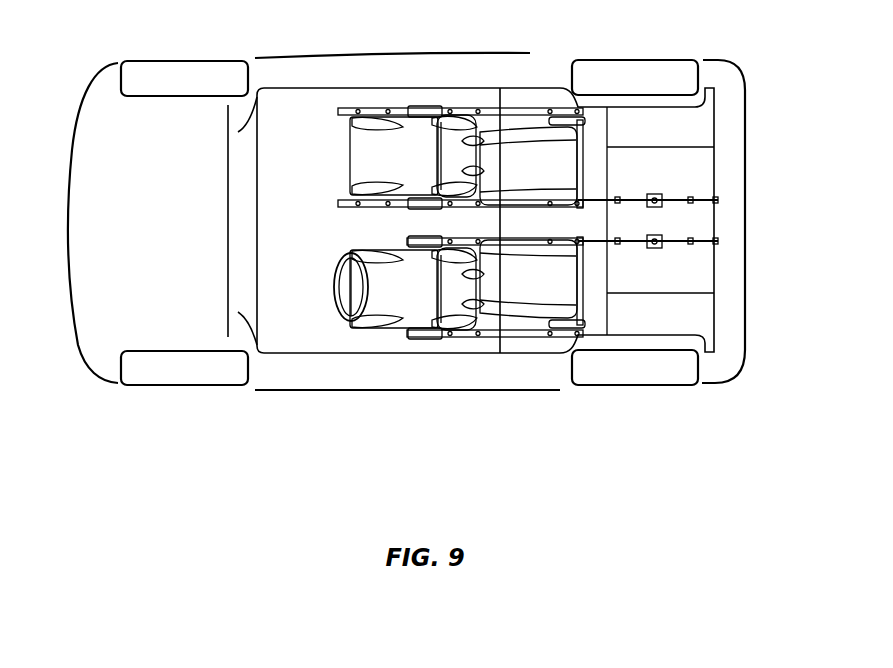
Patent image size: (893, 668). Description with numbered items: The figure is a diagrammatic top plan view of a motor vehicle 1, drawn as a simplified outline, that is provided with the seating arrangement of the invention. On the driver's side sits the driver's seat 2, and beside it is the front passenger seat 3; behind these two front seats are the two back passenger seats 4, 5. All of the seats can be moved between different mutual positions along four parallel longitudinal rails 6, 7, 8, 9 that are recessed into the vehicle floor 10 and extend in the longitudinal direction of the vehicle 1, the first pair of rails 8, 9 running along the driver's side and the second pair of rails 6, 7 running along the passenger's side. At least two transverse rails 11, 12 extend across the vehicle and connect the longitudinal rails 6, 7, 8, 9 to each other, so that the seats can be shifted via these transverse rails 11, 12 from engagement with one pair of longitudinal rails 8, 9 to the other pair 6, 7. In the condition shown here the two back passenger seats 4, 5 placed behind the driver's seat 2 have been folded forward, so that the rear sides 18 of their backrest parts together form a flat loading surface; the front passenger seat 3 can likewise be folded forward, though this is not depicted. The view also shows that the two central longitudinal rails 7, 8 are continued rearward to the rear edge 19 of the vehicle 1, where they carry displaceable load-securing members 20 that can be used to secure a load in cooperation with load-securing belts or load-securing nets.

The motor vehicle 1 is at (97, 62).
The driver's seat 2 is at (380, 290).
The front passenger seat 3 is at (380, 150).
The back passenger seat 4 is at (503, 163).
The back passenger seat 5 is at (503, 277).
The longitudinal rail 6 is at (523, 110).
The longitudinal rail 7 is at (715, 197).
The longitudinal rail 8 is at (715, 245).
The longitudinal rail 9 is at (523, 333).
The vehicle floor 10 is at (680, 128).
The transverse rail 11 is at (565, 107).
The transverse rail 12 is at (580, 172).
The rear side of backrest part 18 is at (520, 179).
The rear edge of the vehicle 19 is at (745, 320).
The load-securing member 20 is at (657, 208).